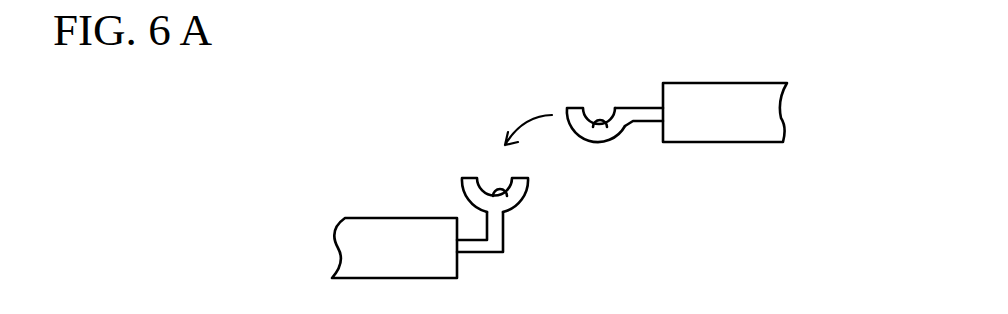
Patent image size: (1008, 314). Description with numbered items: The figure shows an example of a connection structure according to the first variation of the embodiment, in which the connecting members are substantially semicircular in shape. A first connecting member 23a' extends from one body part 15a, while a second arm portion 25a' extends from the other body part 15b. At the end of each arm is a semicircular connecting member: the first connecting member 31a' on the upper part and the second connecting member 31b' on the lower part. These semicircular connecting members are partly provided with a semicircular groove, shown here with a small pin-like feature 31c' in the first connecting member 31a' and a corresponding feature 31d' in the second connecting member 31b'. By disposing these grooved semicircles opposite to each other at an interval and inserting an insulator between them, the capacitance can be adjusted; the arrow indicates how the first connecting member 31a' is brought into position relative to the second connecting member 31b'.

The first member 15a is at (772, 117).
The second member 15b is at (348, 250).
The first connecting member 23a' is at (675, 82).
The second arm portion 25a' is at (541, 244).
The first connecting member 31a' is at (537, 108).
The second connecting member 31b' is at (435, 184).
The first engagement pin 31c' is at (639, 166).
The second engagement pin 31d' is at (557, 214).